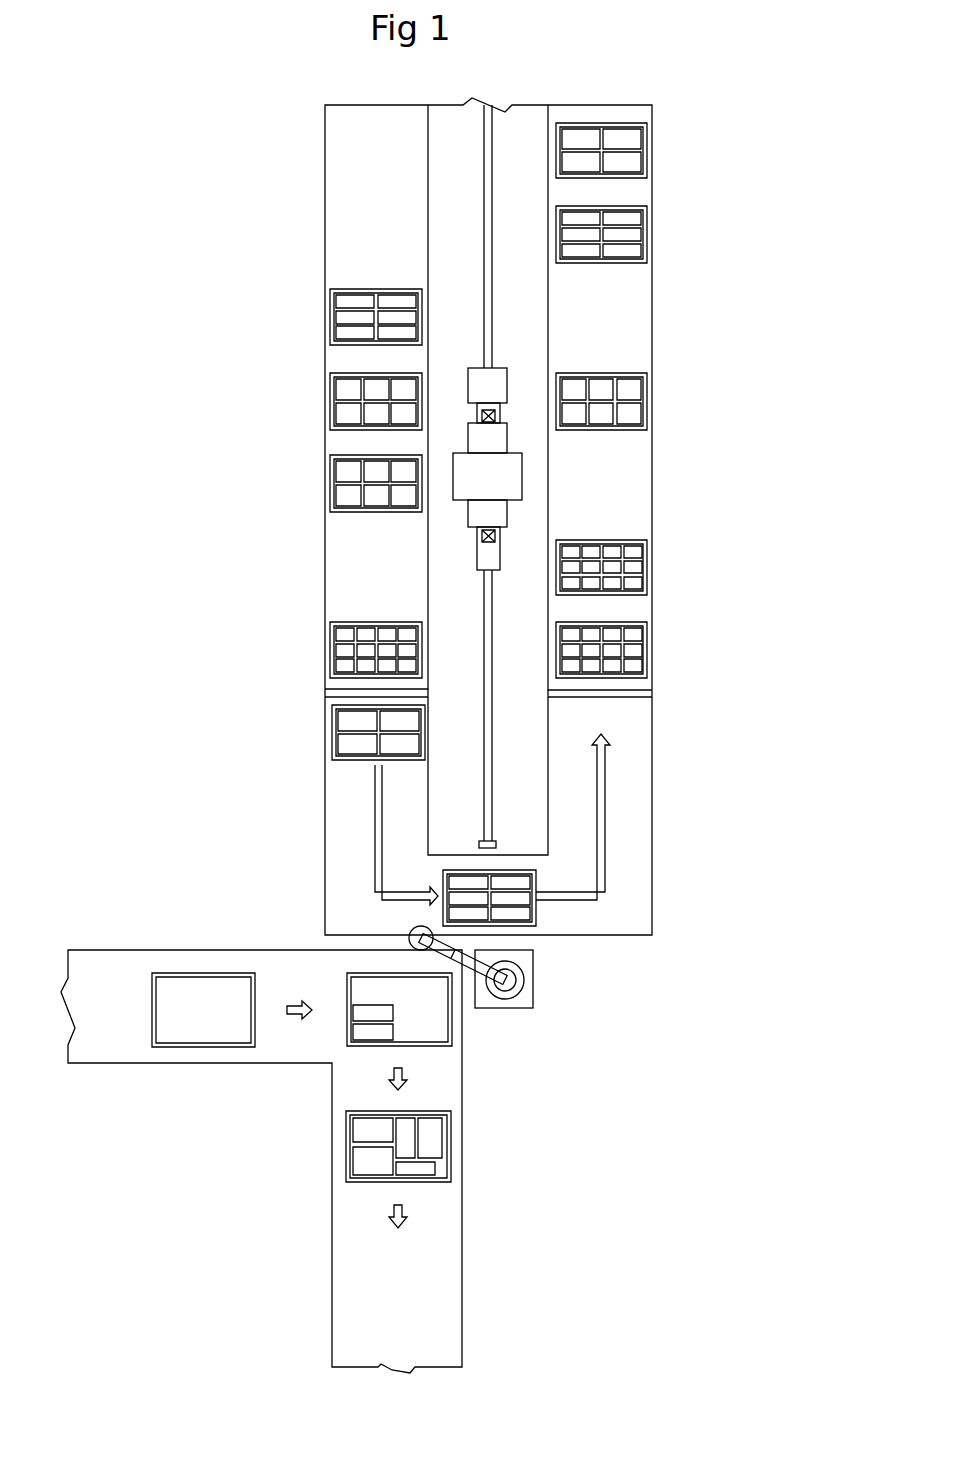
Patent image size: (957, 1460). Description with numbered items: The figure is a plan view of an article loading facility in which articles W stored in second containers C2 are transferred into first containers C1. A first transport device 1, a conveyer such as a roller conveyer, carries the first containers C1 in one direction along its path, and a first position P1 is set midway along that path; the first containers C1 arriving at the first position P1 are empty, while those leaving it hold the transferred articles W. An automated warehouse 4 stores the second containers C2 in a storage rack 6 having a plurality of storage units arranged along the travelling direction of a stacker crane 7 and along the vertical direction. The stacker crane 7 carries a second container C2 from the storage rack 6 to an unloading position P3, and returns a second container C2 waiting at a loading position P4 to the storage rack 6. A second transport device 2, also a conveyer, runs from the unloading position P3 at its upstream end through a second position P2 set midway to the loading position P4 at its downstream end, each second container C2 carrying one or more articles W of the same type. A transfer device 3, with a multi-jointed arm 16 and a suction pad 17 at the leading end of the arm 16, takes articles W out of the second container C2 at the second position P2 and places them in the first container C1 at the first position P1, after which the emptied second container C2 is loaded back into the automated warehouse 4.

The first transport device 1 is at (463, 1283).
The second transport device 2 is at (652, 818).
The transfer device 3 is at (533, 975).
The automated warehouse 4 is at (689, 364).
The storage rack 6 is at (653, 464).
The stacker crane 7 is at (522, 485).
The arm 16 is at (467, 965).
The suction pad 17 is at (419, 938).
The first container C1 is at (186, 973).
The second container C2 is at (648, 226).
The article W is at (407, 320).
The first position P1 is at (380, 966).
The second position P2 is at (512, 848).
The unloading position P3 is at (318, 753).
The loading position P4 is at (672, 715).